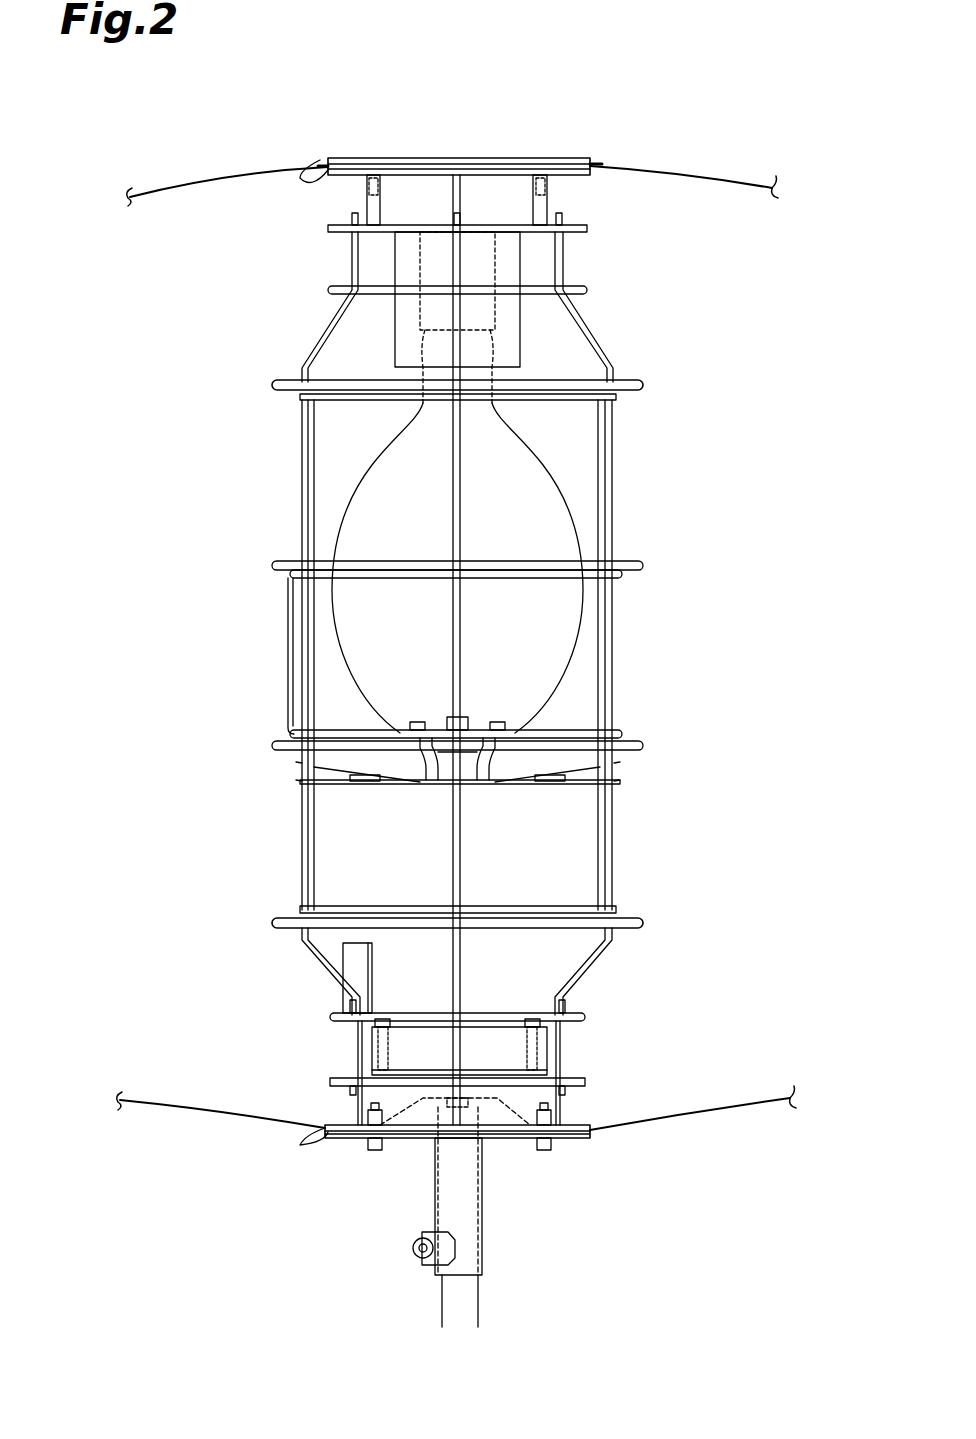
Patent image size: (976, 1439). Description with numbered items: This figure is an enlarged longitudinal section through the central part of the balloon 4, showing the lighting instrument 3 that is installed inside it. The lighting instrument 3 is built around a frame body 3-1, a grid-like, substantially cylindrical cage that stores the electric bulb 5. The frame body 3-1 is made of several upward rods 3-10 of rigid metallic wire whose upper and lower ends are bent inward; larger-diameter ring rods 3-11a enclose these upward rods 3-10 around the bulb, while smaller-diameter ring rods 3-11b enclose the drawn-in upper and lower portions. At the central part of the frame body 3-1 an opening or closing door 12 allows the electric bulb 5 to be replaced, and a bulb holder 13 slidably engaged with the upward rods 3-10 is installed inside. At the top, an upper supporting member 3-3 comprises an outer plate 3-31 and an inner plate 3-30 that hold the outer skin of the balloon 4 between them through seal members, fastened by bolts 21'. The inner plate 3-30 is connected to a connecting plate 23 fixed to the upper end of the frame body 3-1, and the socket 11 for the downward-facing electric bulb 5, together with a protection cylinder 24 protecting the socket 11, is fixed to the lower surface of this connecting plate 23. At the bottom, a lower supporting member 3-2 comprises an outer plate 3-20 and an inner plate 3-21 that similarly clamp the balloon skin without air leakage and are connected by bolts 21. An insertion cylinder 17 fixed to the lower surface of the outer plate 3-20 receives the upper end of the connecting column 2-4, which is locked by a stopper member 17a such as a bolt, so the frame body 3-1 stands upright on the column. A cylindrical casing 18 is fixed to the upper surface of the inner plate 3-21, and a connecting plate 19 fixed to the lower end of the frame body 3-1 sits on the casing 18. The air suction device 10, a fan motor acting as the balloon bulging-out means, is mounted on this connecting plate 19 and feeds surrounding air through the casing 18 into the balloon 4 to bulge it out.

The lighting instrument 3 is at (666, 142).
The balloon 4 is at (235, 170).
The bolt 21' is at (463, 130).
The outer plate 3-31 is at (422, 158).
The inner plate 3-30 is at (458, 182).
The upper supporting member 3-3 is at (562, 195).
The connecting plate 23 is at (588, 230).
The ring rod 3-11b is at (348, 290).
The socket 11 is at (522, 312).
The upward rod 3-10 is at (320, 356).
The protection cylinder 24 is at (522, 348).
The ring rod 3-11a is at (645, 385).
The frame body 3-1 is at (300, 500).
The electric bulb 5 is at (566, 502).
The opening or closing door 12 is at (286, 660).
The bulb holder 13 is at (507, 787).
The air suction device 10 is at (548, 1054).
The connecting plate 19 is at (332, 1082).
The lower supporting member 3-2 is at (566, 1108).
The cylindrical casing 18 is at (400, 1096).
The bolt 21 is at (477, 1157).
The outer plate 3-20 is at (405, 1140).
The inner plate 3-21 is at (497, 1115).
The stopper member 17a is at (412, 1248).
The insertion cylinder 17 is at (484, 1245).
The connecting column 2-4 is at (472, 1302).